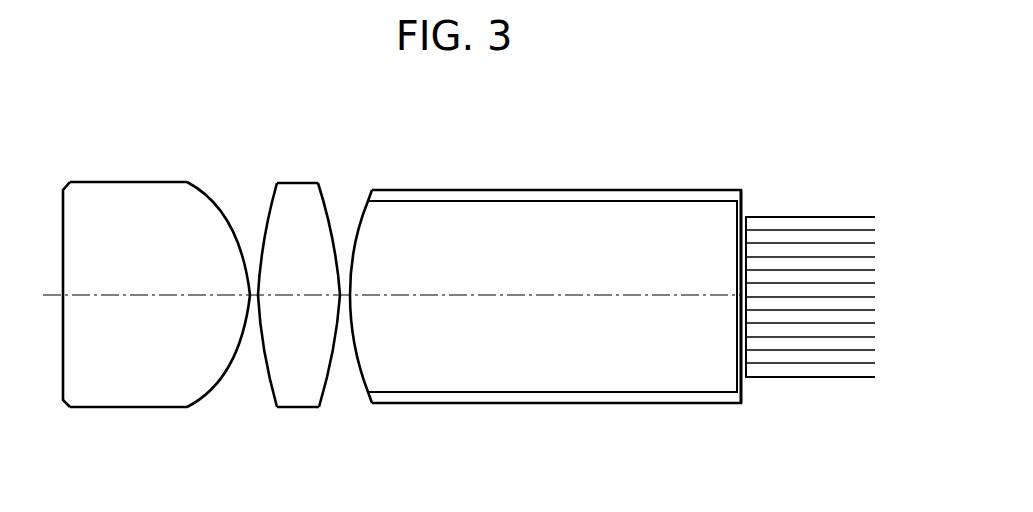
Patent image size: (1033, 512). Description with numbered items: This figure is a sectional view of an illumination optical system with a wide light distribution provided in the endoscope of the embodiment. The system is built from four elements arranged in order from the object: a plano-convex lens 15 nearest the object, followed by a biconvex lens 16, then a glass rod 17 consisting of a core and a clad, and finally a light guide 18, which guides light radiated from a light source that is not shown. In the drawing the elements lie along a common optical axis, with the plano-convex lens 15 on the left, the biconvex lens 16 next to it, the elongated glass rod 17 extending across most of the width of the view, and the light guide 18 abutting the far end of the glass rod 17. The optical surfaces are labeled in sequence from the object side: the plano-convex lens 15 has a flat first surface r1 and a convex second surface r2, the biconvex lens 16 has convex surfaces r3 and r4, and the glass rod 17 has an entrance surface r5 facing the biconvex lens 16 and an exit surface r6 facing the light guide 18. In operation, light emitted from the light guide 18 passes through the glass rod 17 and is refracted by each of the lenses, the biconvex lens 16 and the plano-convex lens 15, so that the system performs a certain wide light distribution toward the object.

The plano-convex lens 15 is at (148, 300).
The biconvex lens 16 is at (297, 300).
The glass rod 17 is at (556, 293).
The light guide 18 is at (803, 363).
The first surface of first lens r1 is at (63, 207).
The second surface of first lens r2 is at (212, 192).
The first surface of second lens r3 is at (272, 198).
The second surface of second lens r4 is at (327, 198).
The entrance surface of rod lens r5 is at (358, 203).
The exit surface of rod lens r6 is at (743, 210).